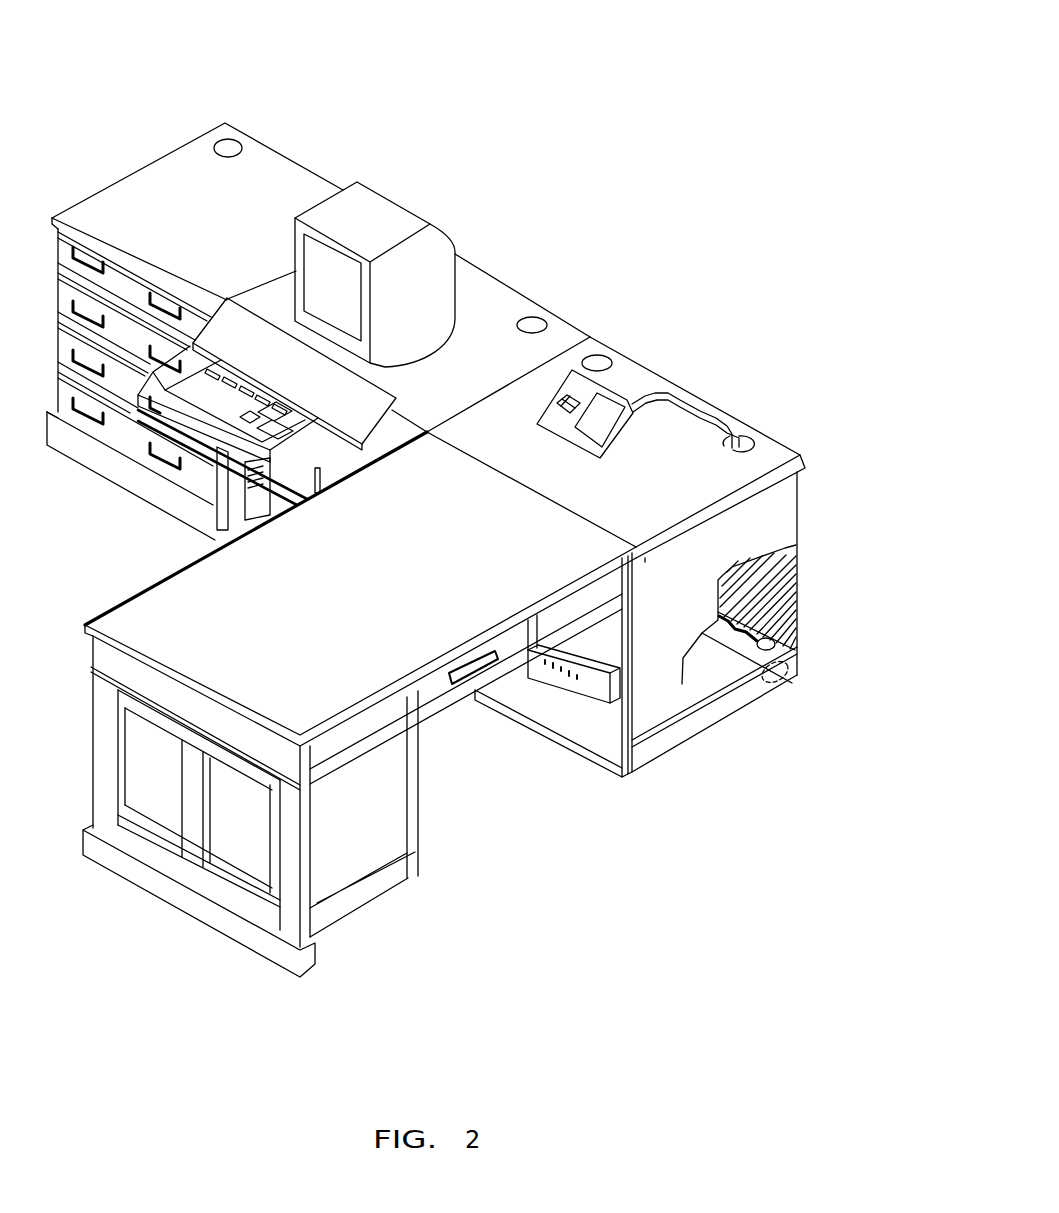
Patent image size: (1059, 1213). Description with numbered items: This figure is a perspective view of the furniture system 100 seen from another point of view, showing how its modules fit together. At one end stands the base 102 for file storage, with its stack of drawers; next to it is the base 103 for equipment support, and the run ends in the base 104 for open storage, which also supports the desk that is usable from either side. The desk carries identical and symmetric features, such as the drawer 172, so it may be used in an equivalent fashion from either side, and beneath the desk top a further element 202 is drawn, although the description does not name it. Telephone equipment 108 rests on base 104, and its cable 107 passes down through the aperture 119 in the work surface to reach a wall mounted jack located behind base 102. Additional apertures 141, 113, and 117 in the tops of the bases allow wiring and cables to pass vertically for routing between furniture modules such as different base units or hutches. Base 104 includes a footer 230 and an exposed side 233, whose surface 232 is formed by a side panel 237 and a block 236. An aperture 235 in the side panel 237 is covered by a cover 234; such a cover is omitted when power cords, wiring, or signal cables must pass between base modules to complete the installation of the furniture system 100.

The furniture system 100 is at (607, 70).
The base for file storage 102 is at (262, 141).
The base for equipment support 103 is at (509, 284).
The base for open storage 104 is at (683, 383).
The aperture 141 is at (222, 139).
The aperture 113 is at (546, 322).
The aperture 117 is at (603, 356).
The aperture 119 is at (746, 440).
The telephone equipment 108 is at (548, 402).
The cable 107 is at (677, 412).
The side panel 237 is at (799, 532).
The surface 232 is at (706, 604).
The exposed side 233 is at (735, 782).
The cover 234 is at (797, 658).
The aperture 235 is at (788, 683).
The block 236 is at (720, 725).
The drawer 172 is at (430, 697).
The power strip 202 is at (590, 697).
The footer 230 is at (598, 762).